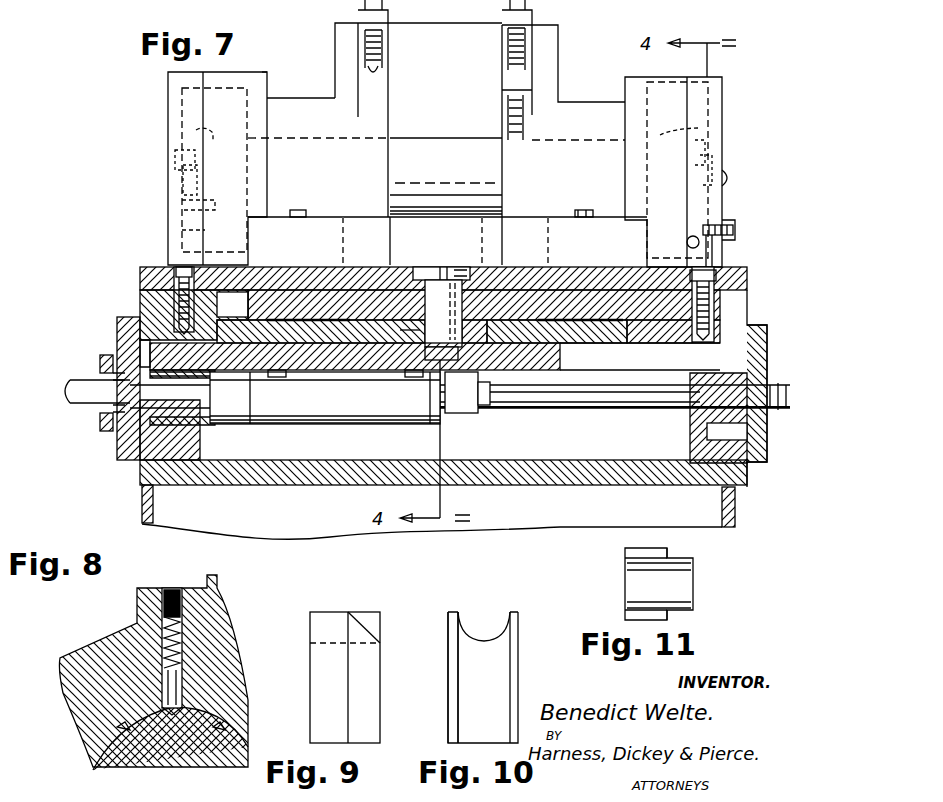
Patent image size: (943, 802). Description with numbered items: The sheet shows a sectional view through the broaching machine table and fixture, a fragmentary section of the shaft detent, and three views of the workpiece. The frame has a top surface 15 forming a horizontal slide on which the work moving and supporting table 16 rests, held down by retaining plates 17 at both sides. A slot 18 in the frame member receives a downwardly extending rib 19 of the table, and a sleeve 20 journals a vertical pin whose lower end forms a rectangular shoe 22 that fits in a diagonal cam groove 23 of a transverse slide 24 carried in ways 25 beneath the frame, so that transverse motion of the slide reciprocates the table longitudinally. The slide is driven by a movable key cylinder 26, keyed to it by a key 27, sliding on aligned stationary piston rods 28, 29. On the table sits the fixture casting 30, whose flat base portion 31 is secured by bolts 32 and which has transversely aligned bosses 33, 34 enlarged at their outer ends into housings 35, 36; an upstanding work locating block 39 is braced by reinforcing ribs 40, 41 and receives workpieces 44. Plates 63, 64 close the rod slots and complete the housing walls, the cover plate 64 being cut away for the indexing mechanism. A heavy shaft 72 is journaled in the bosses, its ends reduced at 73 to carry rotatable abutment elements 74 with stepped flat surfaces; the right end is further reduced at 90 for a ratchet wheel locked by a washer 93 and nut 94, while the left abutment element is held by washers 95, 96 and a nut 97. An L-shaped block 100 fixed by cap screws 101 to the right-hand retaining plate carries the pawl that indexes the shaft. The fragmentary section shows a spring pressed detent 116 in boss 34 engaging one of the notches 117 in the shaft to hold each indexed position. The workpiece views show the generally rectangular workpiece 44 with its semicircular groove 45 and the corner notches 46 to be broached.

In FIG. 7, the top surface 15 is at (668, 333).
In FIG. 7, the work moving and supporting table 16 is at (345, 268).
In FIG. 7, the retaining plates 17 is at (145, 270).
In FIG. 7, the longitudinally extending slot 18 is at (422, 317).
In FIG. 7, the downwardly extending rib 19 is at (412, 330).
In FIG. 7, the sleeve 20 is at (462, 305).
In FIG. 7, the rectangular shoe 22 is at (467, 392).
In FIG. 7, the cam groove 23 is at (373, 370).
In FIG. 7, the transverse slide 24 is at (548, 370).
In FIG. 7, the ways 25 is at (735, 370).
In FIG. 7, the movable key cylinder 26 is at (337, 425).
In FIG. 7, the key 27 is at (280, 377).
In FIG. 7, the stationary piston rod 28 is at (530, 408).
In FIG. 7, the stationary piston rod 29 is at (200, 410).
In FIG. 7, the main casting 30 is at (275, 111).
In FIG. 7, the flat base portion 31 is at (447, 241).
In FIG. 7, the bolts 32 is at (297, 210).
In FIG. 7, the boss 33 is at (306, 99).
In FIG. 7, the boss 34 is at (572, 108).
In FIG. 8, the boss 34 is at (98, 638).
In FIG. 7, the housing 35 is at (265, 72).
In FIG. 7, the housing 36 is at (652, 77).
In FIG. 7, the work locating block 39 is at (428, 20).
In FIG. 7, the reinforcing rib 40 is at (384, 71).
In FIG. 7, the reinforcing rib 41 is at (505, 70).
In FIG. 9, the workpiece 44 is at (318, 676).
In FIG. 10, the workpiece 44 is at (473, 694).
In FIG. 11, the workpiece 44 is at (628, 590).
In FIG. 10, the semicircular groove 45 is at (480, 638).
In FIG. 9, the notches 46 is at (375, 658).
In FIG. 10, the notches 46 is at (448, 668).
In FIG. 11, the notches 46 is at (693, 552).
In FIG. 7, the plate 63 is at (168, 88).
In FIG. 7, the cover plate 64 is at (715, 103).
In FIG. 7, the shaft 72 is at (458, 138).
In FIG. 8, the shaft 72 is at (95, 762).
In FIG. 7, the reduced diameter portion 73 is at (205, 128).
In FIG. 7, the rotatable abutment element 74 is at (195, 233).
In FIG. 7, the further reduced diameter portion 90 is at (708, 145).
In FIG. 7, the washer 93 is at (712, 160).
In FIG. 7, the nut 94 is at (728, 176).
In FIG. 7, the washer 95 is at (190, 192).
In FIG. 7, the washer 96 is at (195, 208).
In FIG. 7, the nut 97 is at (180, 158).
In FIG. 7, the L-shaped block 100 is at (725, 268).
In FIG. 7, the cap screws 101 is at (724, 225).
In FIG. 8, the spring pressed detent 116 is at (118, 727).
In FIG. 8, the notches 117 is at (214, 727).